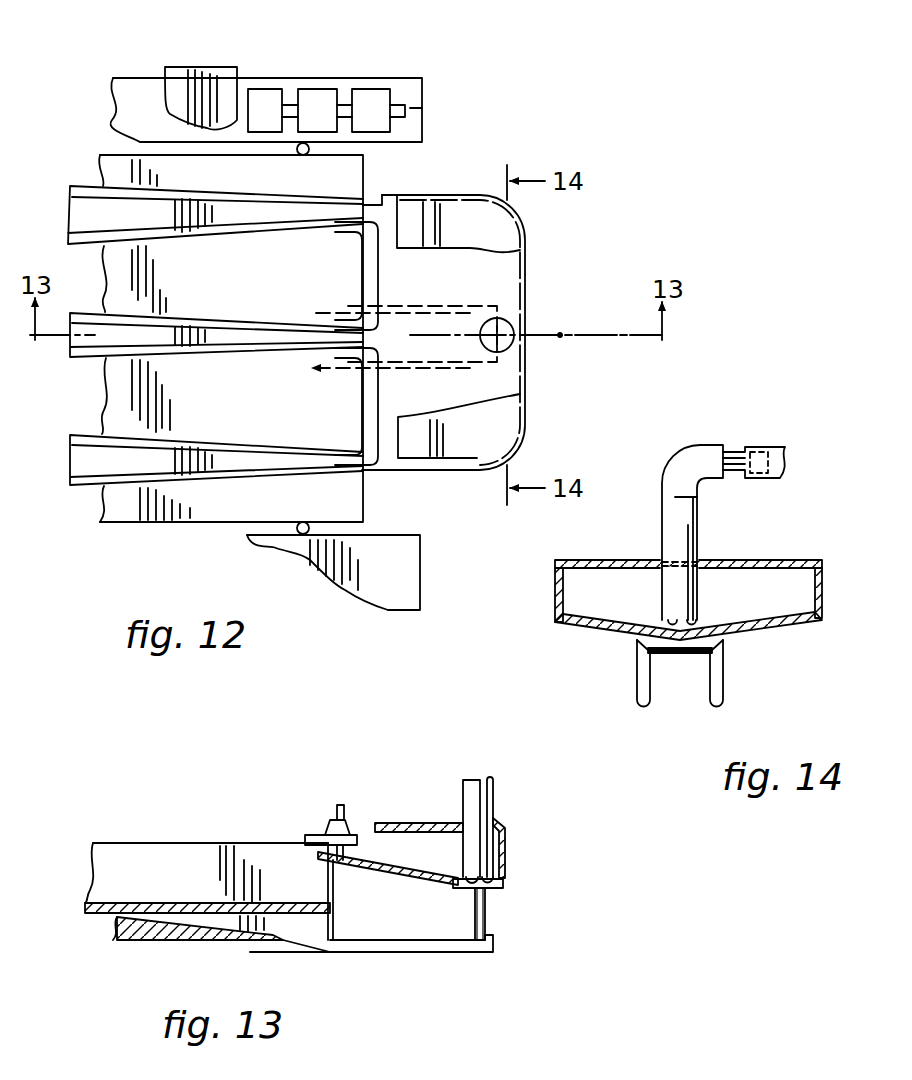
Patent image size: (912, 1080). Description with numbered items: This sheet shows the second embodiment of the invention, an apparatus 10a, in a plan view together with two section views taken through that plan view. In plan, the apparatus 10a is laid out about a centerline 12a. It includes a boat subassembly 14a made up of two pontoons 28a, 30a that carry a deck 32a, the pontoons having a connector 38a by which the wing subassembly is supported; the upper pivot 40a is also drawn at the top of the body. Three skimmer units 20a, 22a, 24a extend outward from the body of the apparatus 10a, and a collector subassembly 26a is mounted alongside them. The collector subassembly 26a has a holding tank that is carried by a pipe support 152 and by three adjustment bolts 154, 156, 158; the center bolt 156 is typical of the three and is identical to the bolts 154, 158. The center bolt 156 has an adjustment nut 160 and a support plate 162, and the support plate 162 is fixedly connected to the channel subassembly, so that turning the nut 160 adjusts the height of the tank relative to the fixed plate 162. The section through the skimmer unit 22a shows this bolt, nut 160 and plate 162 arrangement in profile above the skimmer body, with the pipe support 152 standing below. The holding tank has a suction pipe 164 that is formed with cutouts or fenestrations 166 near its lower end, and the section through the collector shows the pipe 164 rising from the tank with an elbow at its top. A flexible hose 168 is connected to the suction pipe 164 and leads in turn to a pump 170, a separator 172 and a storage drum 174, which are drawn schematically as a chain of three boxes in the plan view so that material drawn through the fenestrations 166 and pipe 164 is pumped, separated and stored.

In FIG. 12, the apparatus 10a is at (530, 152).
In FIG. 14, the apparatus 10a is at (812, 468).
In FIG. 13, the apparatus 10a is at (568, 857).
In FIG. 12, the centerline 12a is at (560, 334).
In FIG. 12, the boat subassembly 14a is at (396, 80).
In FIG. 12, the skimmer unit 20a is at (335, 468).
In FIG. 12, the skimmer unit 22a is at (338, 343).
In FIG. 13, the skimmer unit 22a is at (300, 822).
In FIG. 12, the skimmer unit 24a is at (335, 232).
In FIG. 12, the collector subassembly 26a is at (526, 446).
In FIG. 12, the pontoon 28a is at (398, 608).
In FIG. 12, the pontoon 30a is at (422, 108).
In FIG. 12, the deck 32a is at (182, 80).
In FIG. 12, the connector 38a is at (303, 535).
In FIG. 12, the upper pivot 40a is at (310, 152).
In FIG. 14, the pipe support 152 is at (640, 685).
In FIG. 13, the pipe support 152 is at (488, 920).
In FIG. 12, the adjustment bolt 154 is at (380, 462).
In FIG. 12, the adjustment bolt 156 is at (388, 330).
In FIG. 13, the adjustment bolt 156 is at (346, 834).
In FIG. 12, the adjustment bolt 158 is at (422, 212).
In FIG. 13, the adjustment nut 160 is at (340, 815).
In FIG. 13, the support plate 162 is at (360, 851).
In FIG. 12, the suction pipe 164 is at (510, 350).
In FIG. 14, the suction pipe 164 is at (670, 520).
In FIG. 13, the suction pipe 164 is at (496, 808).
In FIG. 14, the fenestrations 166 is at (675, 618).
In FIG. 13, the fenestrations 166 is at (503, 882).
In FIG. 14, the flexible hose 168 is at (760, 447).
In FIG. 12, the pump 170 is at (365, 100).
In FIG. 12, the separator 172 is at (315, 100).
In FIG. 12, the storage drum 174 is at (262, 100).